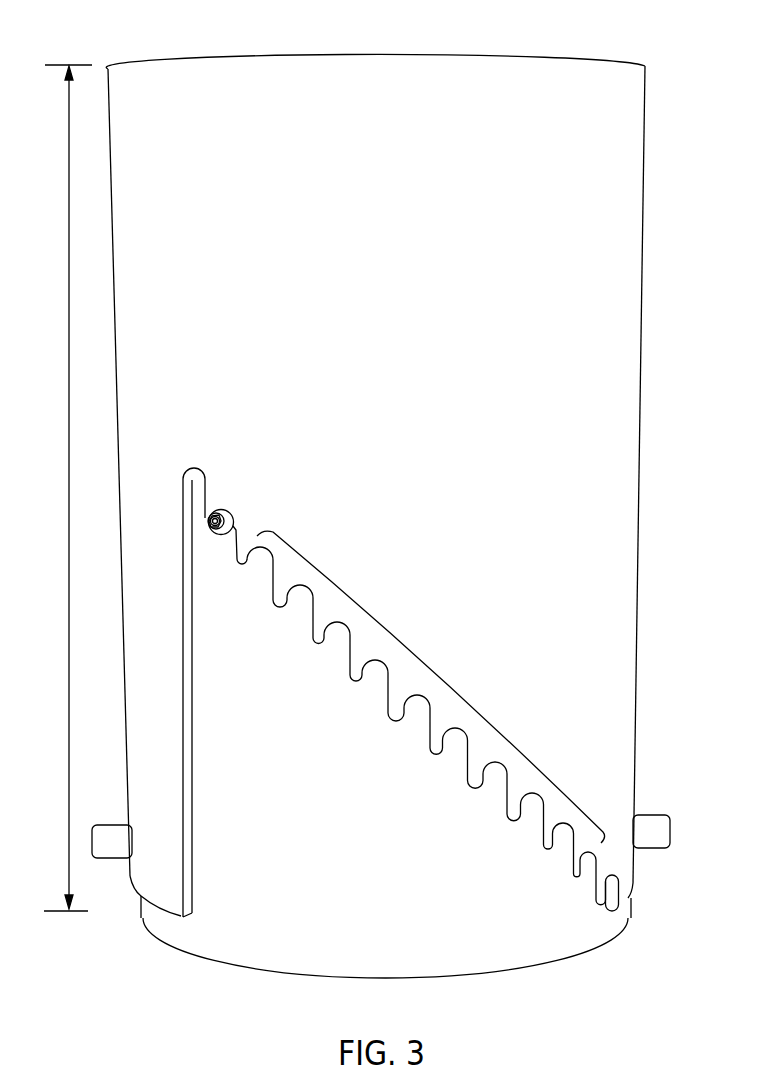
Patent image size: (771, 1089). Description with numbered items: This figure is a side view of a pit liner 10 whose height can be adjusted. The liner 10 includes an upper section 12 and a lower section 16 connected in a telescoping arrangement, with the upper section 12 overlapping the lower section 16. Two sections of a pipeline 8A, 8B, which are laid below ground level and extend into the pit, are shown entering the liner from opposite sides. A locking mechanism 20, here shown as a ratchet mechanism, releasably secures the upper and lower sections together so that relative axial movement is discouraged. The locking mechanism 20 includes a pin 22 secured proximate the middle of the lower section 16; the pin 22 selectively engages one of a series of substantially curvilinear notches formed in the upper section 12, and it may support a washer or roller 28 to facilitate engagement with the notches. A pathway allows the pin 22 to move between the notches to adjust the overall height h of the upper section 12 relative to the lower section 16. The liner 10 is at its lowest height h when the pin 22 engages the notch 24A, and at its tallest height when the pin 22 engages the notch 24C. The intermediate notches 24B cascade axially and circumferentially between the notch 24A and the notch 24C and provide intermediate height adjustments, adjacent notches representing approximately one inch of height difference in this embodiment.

The liner 10 is at (386, 502).
The upper section 12 is at (628, 270).
The lower section 16 is at (220, 945).
The locking mechanism 20 is at (476, 406).
The pin 22 is at (216, 534).
The notch 24A is at (192, 468).
The intermediate notches 24B is at (448, 682).
The notch 24C is at (610, 877).
The washer or roller 28 is at (233, 516).
The pipeline section 8A is at (112, 825).
The pipeline section 8B is at (650, 815).
The height h is at (69, 490).